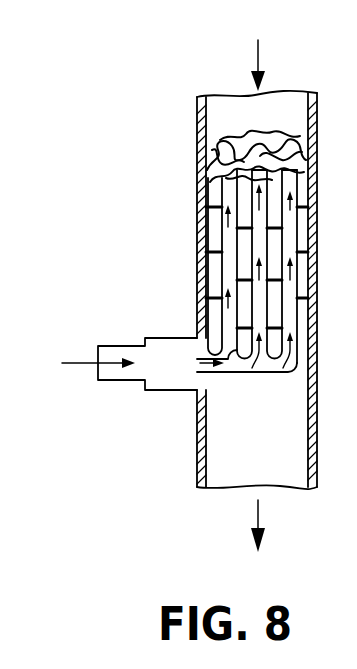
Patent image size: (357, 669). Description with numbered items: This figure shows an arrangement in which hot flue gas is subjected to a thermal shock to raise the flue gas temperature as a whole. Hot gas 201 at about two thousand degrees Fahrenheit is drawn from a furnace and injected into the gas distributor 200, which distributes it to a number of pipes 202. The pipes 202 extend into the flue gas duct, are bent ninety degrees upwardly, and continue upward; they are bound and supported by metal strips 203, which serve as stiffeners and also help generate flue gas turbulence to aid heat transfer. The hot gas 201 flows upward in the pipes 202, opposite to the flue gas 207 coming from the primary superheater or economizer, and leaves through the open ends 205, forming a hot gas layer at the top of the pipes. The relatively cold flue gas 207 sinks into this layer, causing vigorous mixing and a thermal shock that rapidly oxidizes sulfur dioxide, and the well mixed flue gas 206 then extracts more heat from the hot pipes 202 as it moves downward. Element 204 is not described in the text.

The gas distributor 200 is at (170, 411).
The hot gas 201 is at (70, 365).
The pipes 202 is at (227, 279).
The metal strips 203 is at (221, 206).
The baffle 204 is at (228, 234).
The open ends 205 is at (198, 187).
The well mixed flue gas 206 is at (257, 512).
The flue gas 207 is at (257, 57).